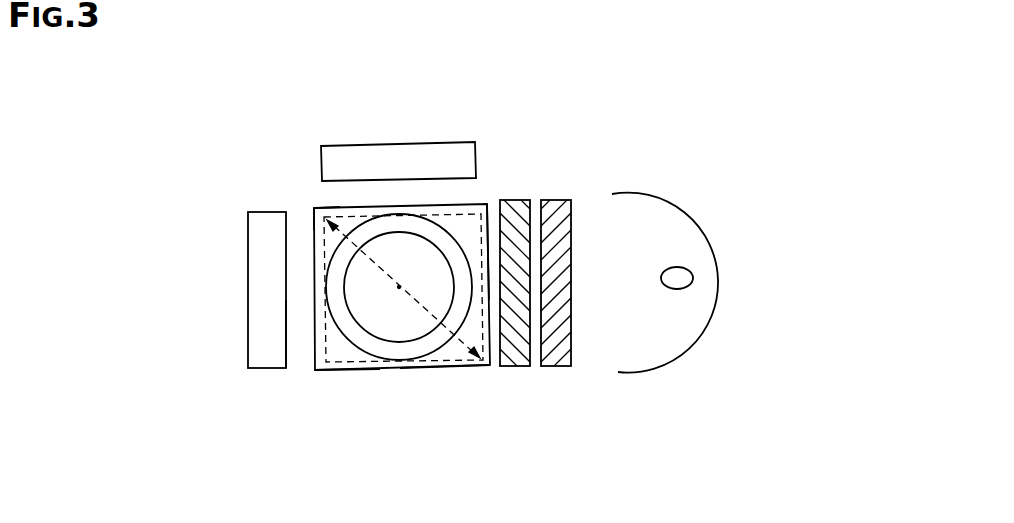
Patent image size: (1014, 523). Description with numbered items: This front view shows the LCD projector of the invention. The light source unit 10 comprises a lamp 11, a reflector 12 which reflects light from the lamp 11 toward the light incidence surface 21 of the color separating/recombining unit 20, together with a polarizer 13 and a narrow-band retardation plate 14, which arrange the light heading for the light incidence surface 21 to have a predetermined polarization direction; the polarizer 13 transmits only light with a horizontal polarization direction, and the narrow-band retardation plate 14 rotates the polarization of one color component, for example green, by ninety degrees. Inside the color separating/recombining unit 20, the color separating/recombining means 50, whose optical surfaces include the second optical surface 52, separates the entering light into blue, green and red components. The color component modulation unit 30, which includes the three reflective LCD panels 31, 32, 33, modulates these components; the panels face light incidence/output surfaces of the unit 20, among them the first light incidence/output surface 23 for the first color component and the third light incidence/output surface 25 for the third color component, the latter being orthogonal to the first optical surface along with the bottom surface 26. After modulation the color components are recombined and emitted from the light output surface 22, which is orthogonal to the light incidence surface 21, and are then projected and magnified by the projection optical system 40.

The light source unit 10 is at (671, 358).
The lamp 11 is at (680, 276).
The reflector 12 is at (641, 193).
The polarizer 13 is at (557, 215).
The narrow-band retardation plate 14 is at (515, 222).
The color separating/recombining unit 20 is at (307, 375).
The light incidence surface 21 is at (488, 215).
The light output surface 22 is at (320, 370).
The first light incidence/output surface 23 is at (314, 208).
The third light incidence/output surface 25 is at (431, 215).
The bottom surface 26 is at (437, 368).
The color component modulation unit 30 is at (240, 244).
The reflective LCD panel 31 is at (267, 340).
The reflective LCD panel 32 is at (364, 362).
The reflective LCD panel 33 is at (352, 165).
The projection optical system 40 is at (455, 340).
The color separating/recombining means 50 is at (399, 287).
The second optical surface 52 is at (514, 375).